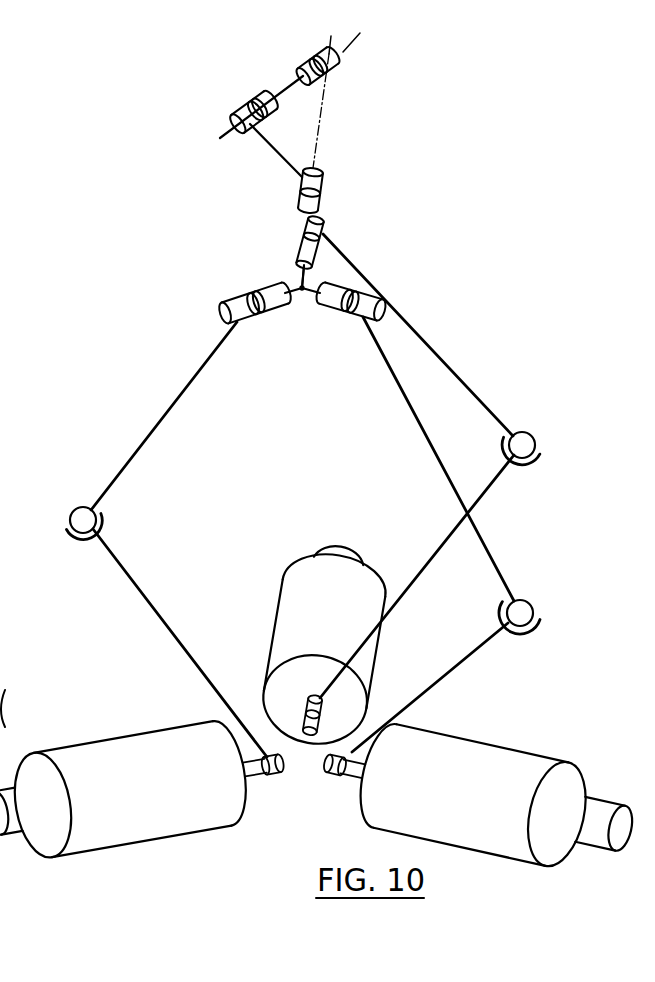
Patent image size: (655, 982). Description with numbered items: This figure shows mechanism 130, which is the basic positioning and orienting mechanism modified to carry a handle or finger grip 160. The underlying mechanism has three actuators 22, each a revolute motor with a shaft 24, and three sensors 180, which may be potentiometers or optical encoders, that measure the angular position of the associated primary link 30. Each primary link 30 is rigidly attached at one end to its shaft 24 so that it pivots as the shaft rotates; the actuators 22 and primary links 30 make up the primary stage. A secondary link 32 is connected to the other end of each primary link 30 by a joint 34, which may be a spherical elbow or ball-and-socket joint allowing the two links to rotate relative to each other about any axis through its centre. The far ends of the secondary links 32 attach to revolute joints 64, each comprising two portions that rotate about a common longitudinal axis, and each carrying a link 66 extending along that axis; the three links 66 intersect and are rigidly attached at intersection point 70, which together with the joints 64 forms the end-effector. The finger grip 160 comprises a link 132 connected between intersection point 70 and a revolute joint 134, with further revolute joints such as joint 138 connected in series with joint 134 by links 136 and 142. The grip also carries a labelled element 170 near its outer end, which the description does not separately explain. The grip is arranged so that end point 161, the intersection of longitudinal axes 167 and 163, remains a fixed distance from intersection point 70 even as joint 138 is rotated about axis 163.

The actuator 22 is at (300, 575).
The shaft 24 is at (338, 762).
The primary link 30 is at (140, 592).
The secondary link 32 is at (163, 413).
The joint 34 is at (522, 440).
The revolute joint 64 is at (323, 222).
The link 66 is at (306, 280).
The intersection point 70 is at (300, 285).
The mechanism 130 is at (462, 199).
The link 132 is at (306, 233).
The revolute joint 134 is at (297, 190).
The link 136 is at (268, 145).
The revolute joint 138 is at (233, 113).
The link 142 is at (290, 85).
The finger grip 160 is at (283, 90).
The end point 161 is at (328, 53).
The longitudinal axis 163 is at (320, 137).
The longitudinal axis 167 is at (358, 35).
The end cap 170 is at (338, 63).
The sensor 180 is at (348, 547).